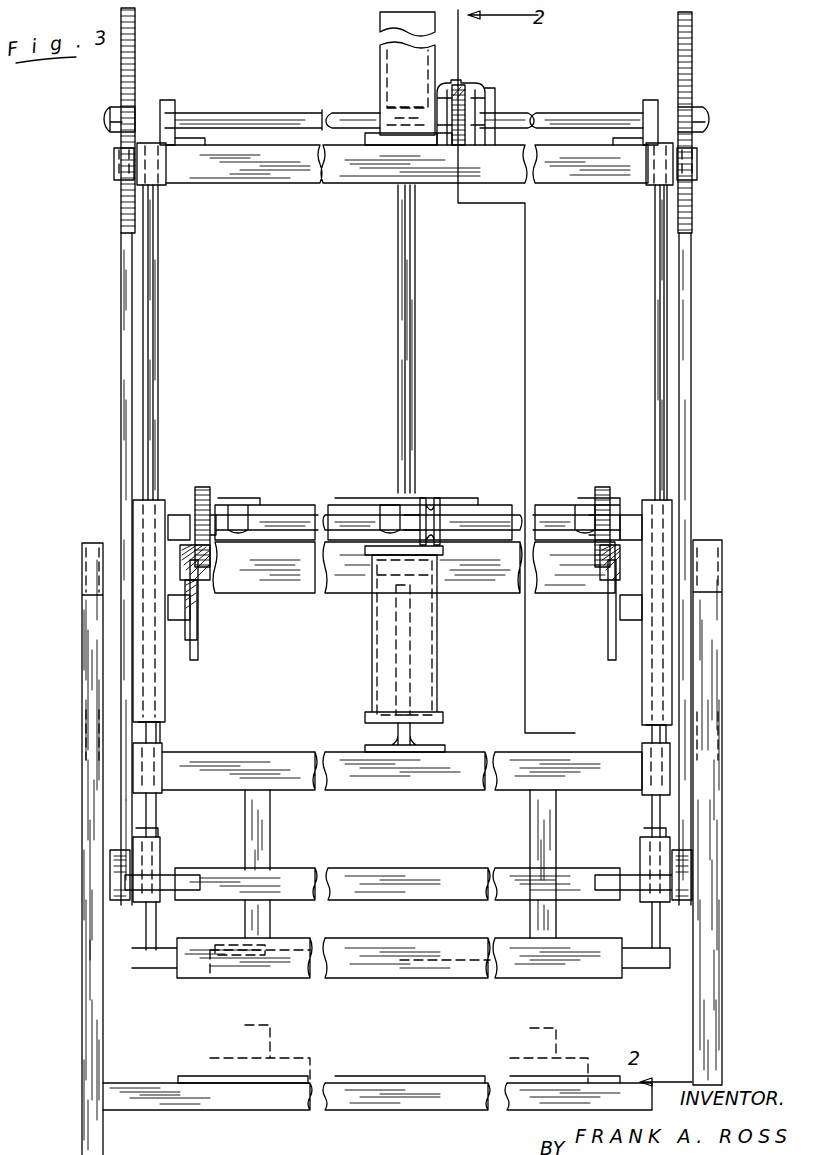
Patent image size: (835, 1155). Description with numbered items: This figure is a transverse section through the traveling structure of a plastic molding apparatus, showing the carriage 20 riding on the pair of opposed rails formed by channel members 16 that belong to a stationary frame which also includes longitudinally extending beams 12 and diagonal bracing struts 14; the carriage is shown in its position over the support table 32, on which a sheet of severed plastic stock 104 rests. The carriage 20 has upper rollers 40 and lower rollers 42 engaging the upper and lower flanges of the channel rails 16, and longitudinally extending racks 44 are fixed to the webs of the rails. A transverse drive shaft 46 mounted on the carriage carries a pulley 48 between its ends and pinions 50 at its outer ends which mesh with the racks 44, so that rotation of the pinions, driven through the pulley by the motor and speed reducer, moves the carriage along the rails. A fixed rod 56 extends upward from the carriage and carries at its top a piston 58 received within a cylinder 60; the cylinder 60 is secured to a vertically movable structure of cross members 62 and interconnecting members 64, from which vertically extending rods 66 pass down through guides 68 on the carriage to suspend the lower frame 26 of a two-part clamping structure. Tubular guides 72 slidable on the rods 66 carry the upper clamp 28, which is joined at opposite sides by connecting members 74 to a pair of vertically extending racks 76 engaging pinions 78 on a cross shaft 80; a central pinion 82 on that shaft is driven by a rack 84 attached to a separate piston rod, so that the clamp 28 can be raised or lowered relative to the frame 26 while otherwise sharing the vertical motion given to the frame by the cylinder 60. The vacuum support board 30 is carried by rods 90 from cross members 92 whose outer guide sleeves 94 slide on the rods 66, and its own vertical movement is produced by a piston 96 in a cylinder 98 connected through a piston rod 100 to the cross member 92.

The longitudinally extending beams 12 is at (92, 733).
The diagonal bracing struts 14 is at (82, 768).
The channel members 16 is at (197, 580).
The carriage 20 is at (290, 500).
The frame 26 is at (310, 920).
The clamp 28 is at (302, 868).
The vacuum support board 30 is at (223, 940).
The support table 32 is at (135, 1110).
The upper rollers 40 is at (175, 516).
The lower rollers 42 is at (198, 622).
The racks 44 is at (205, 558).
The transverse drive shaft 46 is at (422, 486).
The pulley 48 is at (425, 498).
The pinions 50 is at (605, 489).
The fixed rod 56 is at (415, 322).
The piston 58 is at (387, 96).
The cylinder 60 is at (380, 50).
The cross members 62 is at (570, 188).
The interconnecting members 64 is at (166, 182).
The vertically extending rods 66 is at (158, 346).
The guides 68 is at (165, 702).
The tubular guides 72 is at (160, 850).
The connecting members 74 is at (110, 878).
The vertically extending racks 76 is at (121, 333).
The pinions 78 is at (121, 99).
The cross shaft 80 is at (240, 98).
The central pinion 82 is at (465, 112).
The rack 84 is at (458, 90).
The rods 90 is at (530, 832).
The cross members 92 is at (297, 738).
The guide sleeves 94 is at (168, 750).
The piston 96 is at (438, 556).
The cylinder 98 is at (437, 611).
The piston rod 100 is at (410, 733).
The severed plastic stock 104 is at (178, 1083).